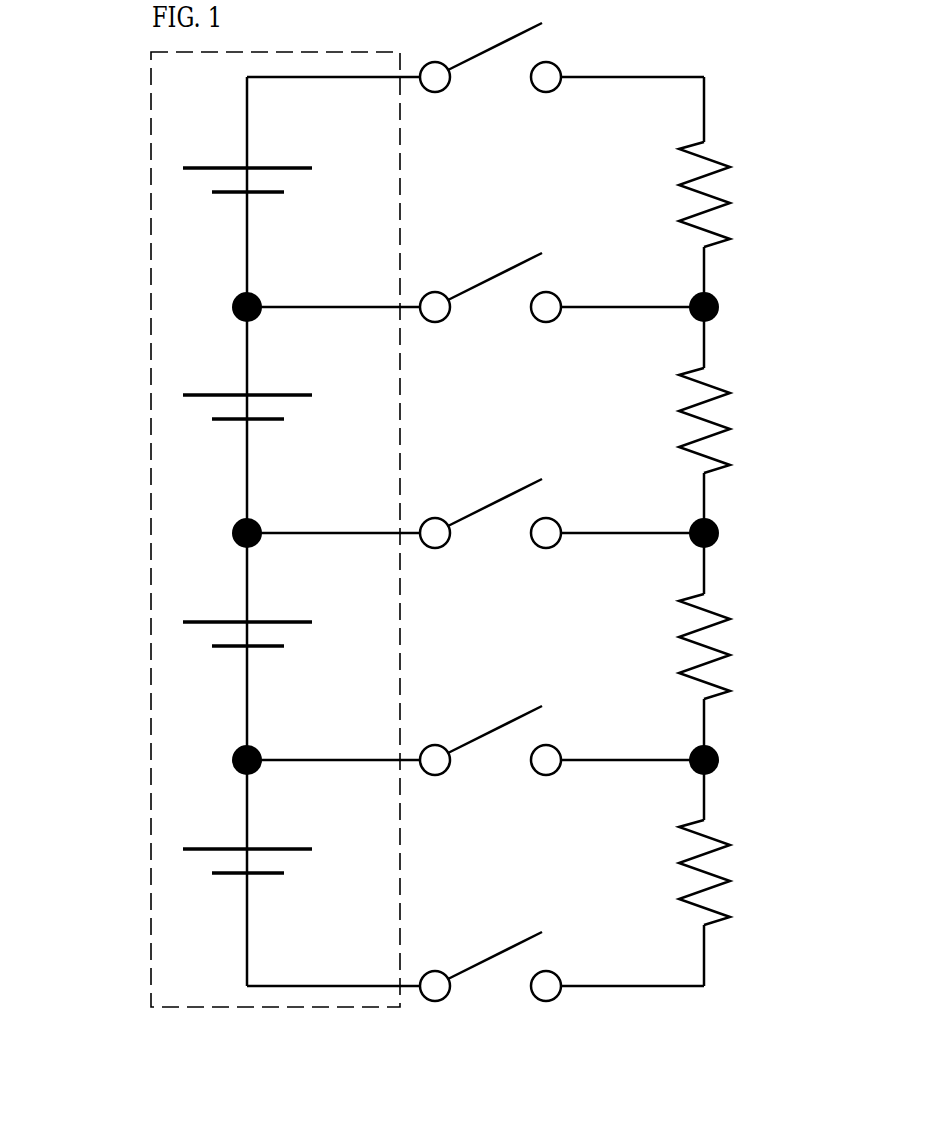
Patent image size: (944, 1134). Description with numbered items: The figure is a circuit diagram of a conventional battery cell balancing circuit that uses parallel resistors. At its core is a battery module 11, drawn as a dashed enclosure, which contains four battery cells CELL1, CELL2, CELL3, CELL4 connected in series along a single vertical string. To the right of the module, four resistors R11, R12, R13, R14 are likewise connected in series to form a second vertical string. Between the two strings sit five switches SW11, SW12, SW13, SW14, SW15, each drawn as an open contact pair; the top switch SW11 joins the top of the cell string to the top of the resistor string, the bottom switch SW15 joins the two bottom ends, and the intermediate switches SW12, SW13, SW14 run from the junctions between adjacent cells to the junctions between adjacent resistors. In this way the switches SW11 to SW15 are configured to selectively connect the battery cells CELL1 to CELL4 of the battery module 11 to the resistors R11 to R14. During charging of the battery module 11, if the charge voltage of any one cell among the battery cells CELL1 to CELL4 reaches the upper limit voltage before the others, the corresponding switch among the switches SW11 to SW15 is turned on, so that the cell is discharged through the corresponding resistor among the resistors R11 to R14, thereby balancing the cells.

The battery module 11 is at (150, 263).
The battery cell CELL1 is at (279, 151).
The battery cell CELL2 is at (279, 377).
The battery cell CELL3 is at (279, 607).
The battery cell CELL4 is at (279, 832).
The switch SW11 is at (490, 84).
The switch SW12 is at (490, 314).
The switch SW13 is at (490, 540).
The switch SW14 is at (490, 768).
The switch SW15 is at (490, 993).
The resistor R11 is at (747, 194).
The resistor R12 is at (747, 420).
The resistor R13 is at (747, 646).
The resistor R14 is at (747, 872).